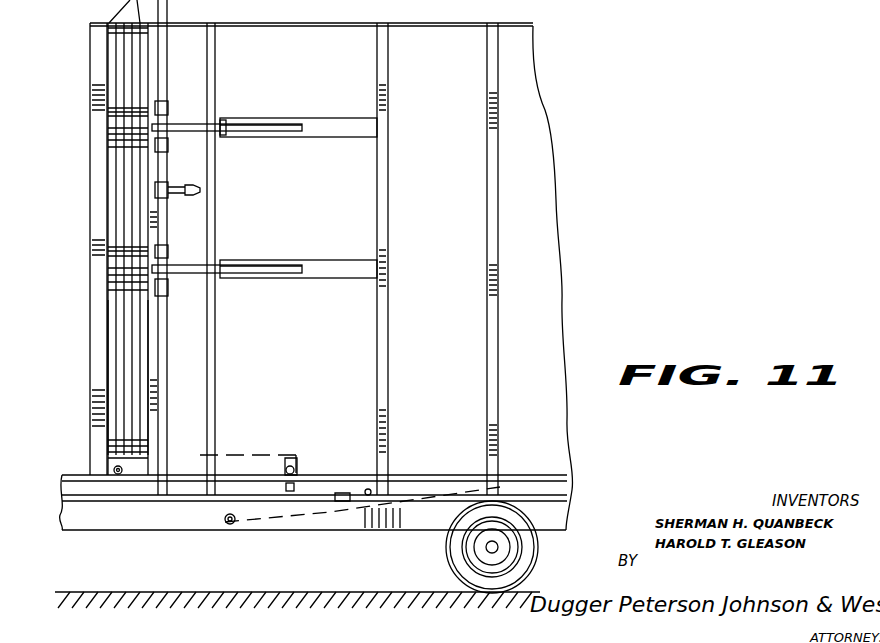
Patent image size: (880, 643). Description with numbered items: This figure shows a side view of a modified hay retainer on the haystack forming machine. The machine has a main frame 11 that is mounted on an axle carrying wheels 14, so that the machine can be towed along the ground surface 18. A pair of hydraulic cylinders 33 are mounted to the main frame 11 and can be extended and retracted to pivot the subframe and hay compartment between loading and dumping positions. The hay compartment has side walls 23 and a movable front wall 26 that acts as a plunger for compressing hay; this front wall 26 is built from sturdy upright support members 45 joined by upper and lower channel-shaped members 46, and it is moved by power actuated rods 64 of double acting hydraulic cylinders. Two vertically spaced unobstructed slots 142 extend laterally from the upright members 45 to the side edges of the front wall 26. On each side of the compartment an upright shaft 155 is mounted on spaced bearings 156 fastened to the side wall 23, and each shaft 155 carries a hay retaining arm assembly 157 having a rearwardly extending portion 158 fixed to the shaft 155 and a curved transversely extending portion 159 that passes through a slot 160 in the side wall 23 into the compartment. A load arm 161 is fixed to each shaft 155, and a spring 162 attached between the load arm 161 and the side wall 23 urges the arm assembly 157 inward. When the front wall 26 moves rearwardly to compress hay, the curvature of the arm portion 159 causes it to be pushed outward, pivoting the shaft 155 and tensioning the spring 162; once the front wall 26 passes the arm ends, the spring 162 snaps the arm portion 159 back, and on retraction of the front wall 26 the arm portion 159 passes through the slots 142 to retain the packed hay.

The main frame 11 is at (272, 529).
The wheels 14 is at (490, 525).
The ground surface 18 is at (147, 591).
The side walls 23 is at (430, 40).
The movable front wall assembly 26 is at (138, 415).
The hydraulic cylinders 33 is at (338, 514).
The upright support members 45 is at (97, 190).
The upper and lower members 46 is at (108, 446).
The power actuated rods 64 is at (118, 475).
The slots or spaces 142 is at (130, 108).
The upright shaft 155 is at (165, 230).
The bearings 156 is at (170, 115).
The hay retaining arm assembly 157 is at (232, 118).
The rearwardly extending portion 158 is at (290, 135).
The curved transversely extending portion 159 is at (380, 154).
The slots 160 is at (340, 127).
The load arm 161 is at (168, 188).
The spring 162 is at (195, 195).